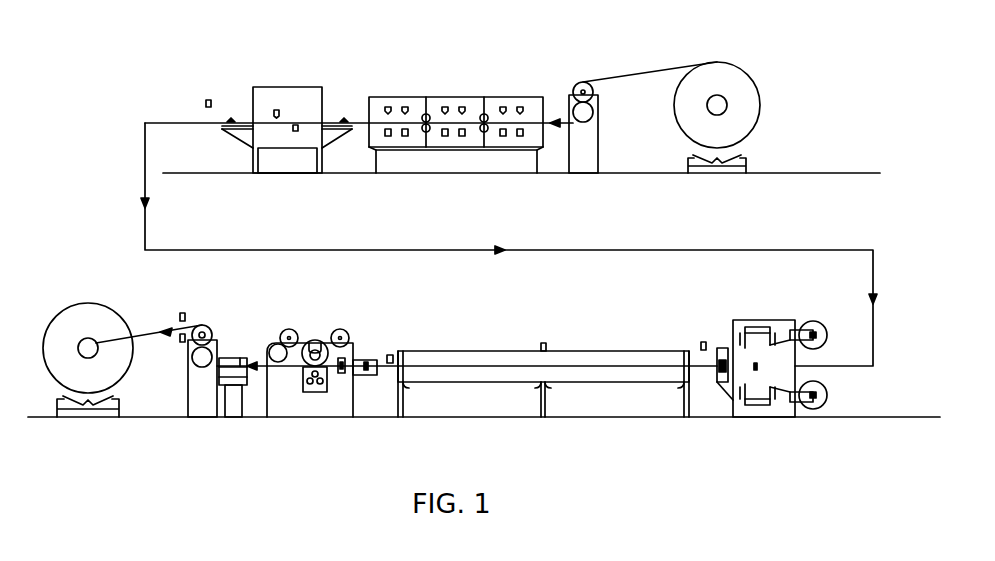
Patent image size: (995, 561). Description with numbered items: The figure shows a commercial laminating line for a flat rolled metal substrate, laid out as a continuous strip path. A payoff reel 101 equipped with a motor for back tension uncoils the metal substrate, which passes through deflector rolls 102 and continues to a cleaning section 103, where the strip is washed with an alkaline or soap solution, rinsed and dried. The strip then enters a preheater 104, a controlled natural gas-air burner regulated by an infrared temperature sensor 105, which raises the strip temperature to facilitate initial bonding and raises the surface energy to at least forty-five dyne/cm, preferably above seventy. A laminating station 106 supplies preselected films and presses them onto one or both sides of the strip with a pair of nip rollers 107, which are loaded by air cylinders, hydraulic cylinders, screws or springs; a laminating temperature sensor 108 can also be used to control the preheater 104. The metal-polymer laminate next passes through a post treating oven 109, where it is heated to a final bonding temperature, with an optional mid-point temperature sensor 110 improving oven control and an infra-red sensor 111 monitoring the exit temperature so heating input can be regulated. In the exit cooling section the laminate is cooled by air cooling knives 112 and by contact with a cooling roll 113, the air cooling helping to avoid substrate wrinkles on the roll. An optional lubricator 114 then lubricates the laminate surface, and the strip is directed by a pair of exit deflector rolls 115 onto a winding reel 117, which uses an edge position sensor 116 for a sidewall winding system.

The payoff reel 101 is at (720, 55).
The deflector rolls 102 is at (583, 72).
The cleaning section 103 is at (452, 88).
The preheater 104 is at (290, 82).
The temperature sensor 105 is at (209, 98).
The laminating station 106 is at (763, 320).
The nip rollers 107 is at (723, 347).
The laminating temperature sensor 108 is at (703, 340).
The post treating oven 109 is at (595, 347).
The mid-point temperature sensor 110 is at (542, 342).
The infra-red sensor 111 is at (390, 353).
The air cooling knives 112 is at (364, 358).
The cooling roll 113 is at (315, 340).
The lubricator 114 is at (236, 355).
The exit deflector rolls 115 is at (204, 320).
The edge position sensor 116 is at (182, 311).
The winding reel 117 is at (90, 305).